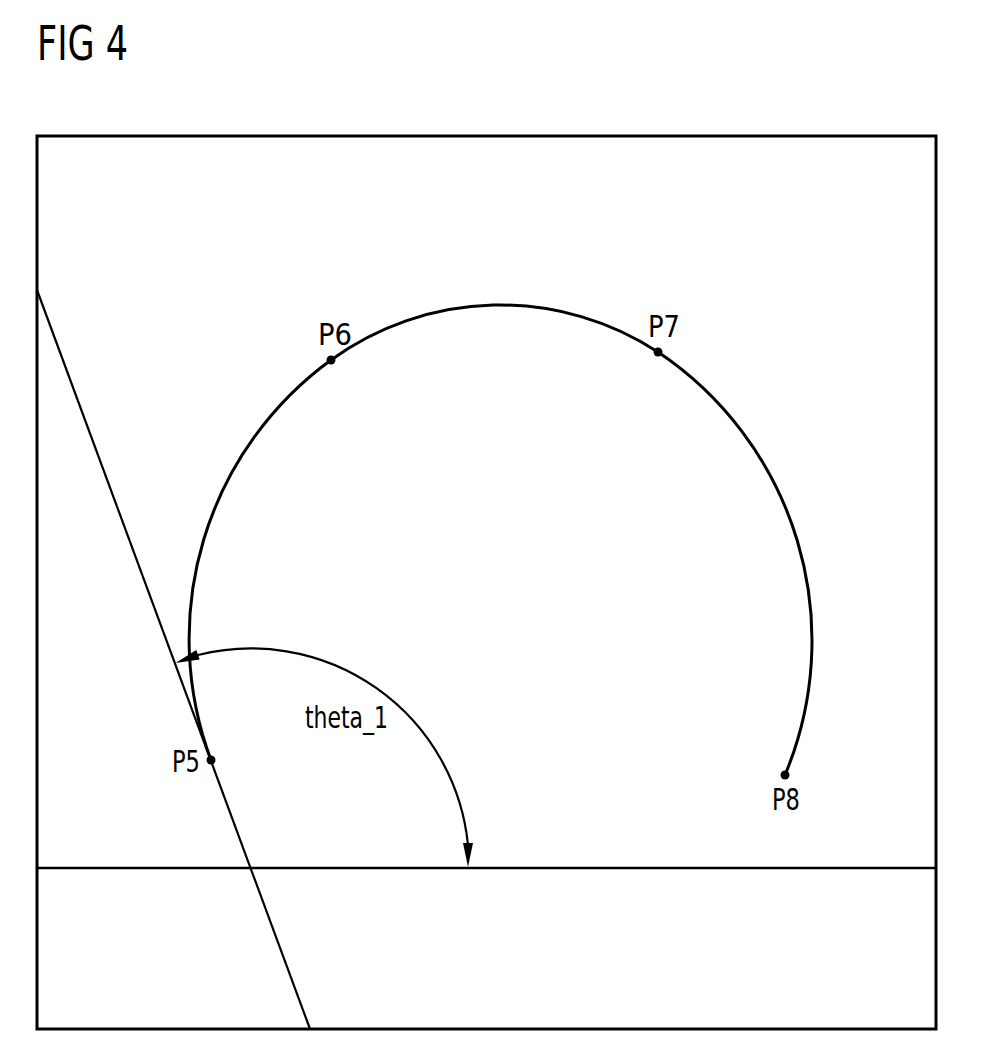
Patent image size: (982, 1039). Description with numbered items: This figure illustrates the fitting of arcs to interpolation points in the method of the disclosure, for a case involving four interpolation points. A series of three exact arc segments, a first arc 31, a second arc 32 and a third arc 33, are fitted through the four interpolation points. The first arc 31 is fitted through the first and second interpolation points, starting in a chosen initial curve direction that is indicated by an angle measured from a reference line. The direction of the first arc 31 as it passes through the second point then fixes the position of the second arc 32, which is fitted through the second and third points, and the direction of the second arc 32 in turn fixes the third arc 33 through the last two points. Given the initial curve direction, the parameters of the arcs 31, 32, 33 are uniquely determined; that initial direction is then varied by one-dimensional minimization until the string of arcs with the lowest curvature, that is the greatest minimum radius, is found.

The first arc 31 is at (232, 473).
The second arc 32 is at (503, 303).
The third arc 33 is at (810, 598).